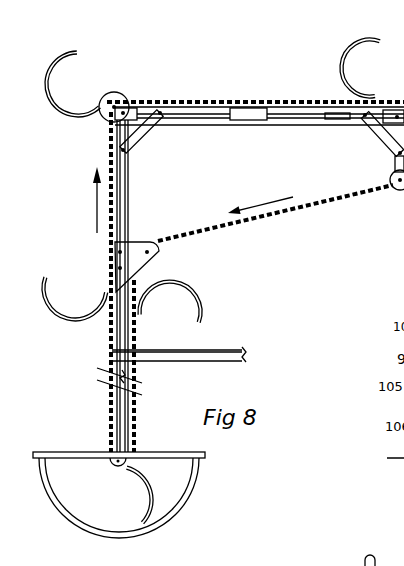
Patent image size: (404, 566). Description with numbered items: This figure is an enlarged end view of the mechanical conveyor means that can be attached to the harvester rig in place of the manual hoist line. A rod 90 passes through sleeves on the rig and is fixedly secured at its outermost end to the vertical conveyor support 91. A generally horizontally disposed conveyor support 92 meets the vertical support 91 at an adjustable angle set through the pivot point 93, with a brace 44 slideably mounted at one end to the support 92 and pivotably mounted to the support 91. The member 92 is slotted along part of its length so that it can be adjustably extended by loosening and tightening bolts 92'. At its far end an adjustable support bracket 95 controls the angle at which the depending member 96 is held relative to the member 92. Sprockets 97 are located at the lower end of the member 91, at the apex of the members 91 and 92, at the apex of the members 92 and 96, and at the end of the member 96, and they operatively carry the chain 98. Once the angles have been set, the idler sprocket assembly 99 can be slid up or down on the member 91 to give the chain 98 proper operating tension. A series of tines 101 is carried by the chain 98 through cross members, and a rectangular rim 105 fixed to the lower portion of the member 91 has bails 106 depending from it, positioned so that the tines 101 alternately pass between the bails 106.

The link 44 is at (141, 138).
The rod 90 is at (193, 361).
The vertical conveyor support 91 is at (113, 337).
The horizontally disposed conveyor support 92 is at (259, 99).
The bolts 92' is at (248, 129).
The pivot point 93 is at (133, 100).
The adjustable support bracket 95 is at (389, 139).
The depending member 96 is at (400, 165).
The sprockets 97 is at (126, 101).
The chain 98 is at (280, 213).
The idler sprocket assembly 99 is at (115, 258).
The tines 101 is at (64, 57).
The rectangular rim 105 is at (53, 453).
The bails 106 is at (90, 526).